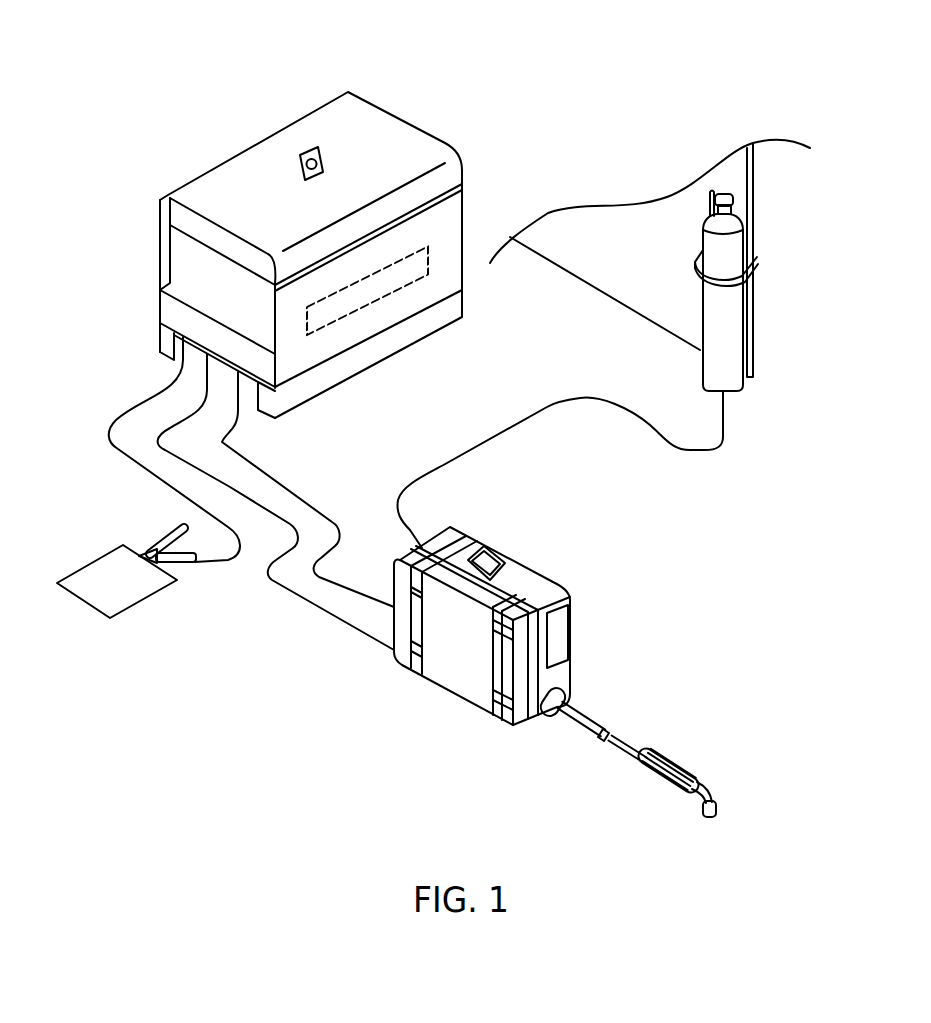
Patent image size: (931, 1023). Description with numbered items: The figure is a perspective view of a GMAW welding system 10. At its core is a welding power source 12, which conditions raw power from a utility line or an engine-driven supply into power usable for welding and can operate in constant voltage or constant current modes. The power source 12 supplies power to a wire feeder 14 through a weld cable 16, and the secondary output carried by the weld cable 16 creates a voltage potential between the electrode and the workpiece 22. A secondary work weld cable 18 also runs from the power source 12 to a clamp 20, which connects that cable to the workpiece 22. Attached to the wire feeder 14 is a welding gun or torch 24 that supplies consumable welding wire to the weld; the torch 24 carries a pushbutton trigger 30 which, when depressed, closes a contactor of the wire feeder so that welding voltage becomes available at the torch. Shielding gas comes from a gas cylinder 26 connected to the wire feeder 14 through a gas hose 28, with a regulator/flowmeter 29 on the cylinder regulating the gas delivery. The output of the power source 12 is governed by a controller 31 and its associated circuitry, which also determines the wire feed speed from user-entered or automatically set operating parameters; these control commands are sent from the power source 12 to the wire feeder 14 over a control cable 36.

The GMAW welding system 10 is at (541, 106).
The welding power source 12 is at (251, 147).
The wire feeder 14 is at (456, 692).
The weld cable 16 is at (160, 430).
The secondary work weld cable 18 is at (138, 404).
The clamp 20 is at (182, 563).
The workpiece 22 is at (86, 605).
The welding gun or torch 24 is at (640, 762).
The gas cylinder 26 is at (714, 254).
The gas hose 28 is at (707, 455).
The regulator/flowmeter 29 is at (724, 194).
The pushbutton trigger 30 is at (672, 774).
The controller 31 is at (370, 310).
The control cable 36 is at (283, 486).